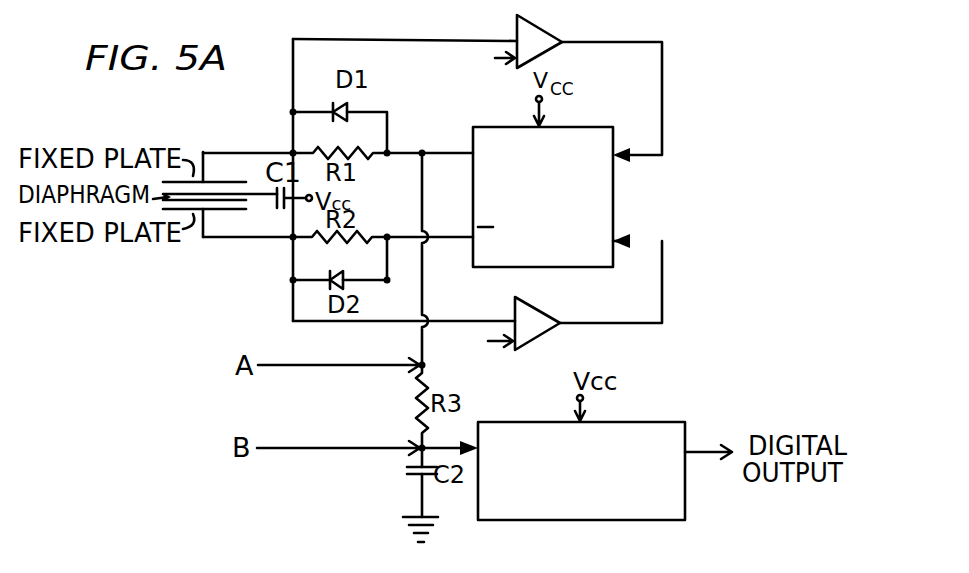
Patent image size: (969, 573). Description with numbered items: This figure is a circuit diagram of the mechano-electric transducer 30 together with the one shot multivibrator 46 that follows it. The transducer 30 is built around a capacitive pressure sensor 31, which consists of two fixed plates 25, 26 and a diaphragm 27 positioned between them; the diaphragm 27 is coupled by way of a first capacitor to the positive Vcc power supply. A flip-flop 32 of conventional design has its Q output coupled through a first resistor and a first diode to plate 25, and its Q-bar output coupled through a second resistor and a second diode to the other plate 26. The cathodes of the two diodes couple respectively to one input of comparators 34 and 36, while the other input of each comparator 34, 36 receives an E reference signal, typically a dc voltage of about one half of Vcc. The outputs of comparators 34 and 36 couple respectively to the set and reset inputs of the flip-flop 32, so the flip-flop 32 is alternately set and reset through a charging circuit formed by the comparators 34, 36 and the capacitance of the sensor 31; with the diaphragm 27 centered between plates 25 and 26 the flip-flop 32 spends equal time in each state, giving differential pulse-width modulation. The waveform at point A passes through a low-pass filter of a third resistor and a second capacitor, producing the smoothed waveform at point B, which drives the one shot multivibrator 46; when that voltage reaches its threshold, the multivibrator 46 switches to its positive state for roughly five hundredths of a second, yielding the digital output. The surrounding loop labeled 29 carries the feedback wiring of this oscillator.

The plate 25 is at (194, 172).
The plate 26 is at (192, 220).
The diaphragm 27 is at (230, 200).
The oscillator circuit 29 is at (405, 20).
The mechano-electric transducer 30 is at (697, 116).
The capacitive pressure sensor 31 is at (190, 130).
The flip-flop 32 is at (543, 197).
The comparator 34 is at (547, 25).
The comparator 36 is at (547, 335).
The one shot multivibrator 46 is at (588, 522).